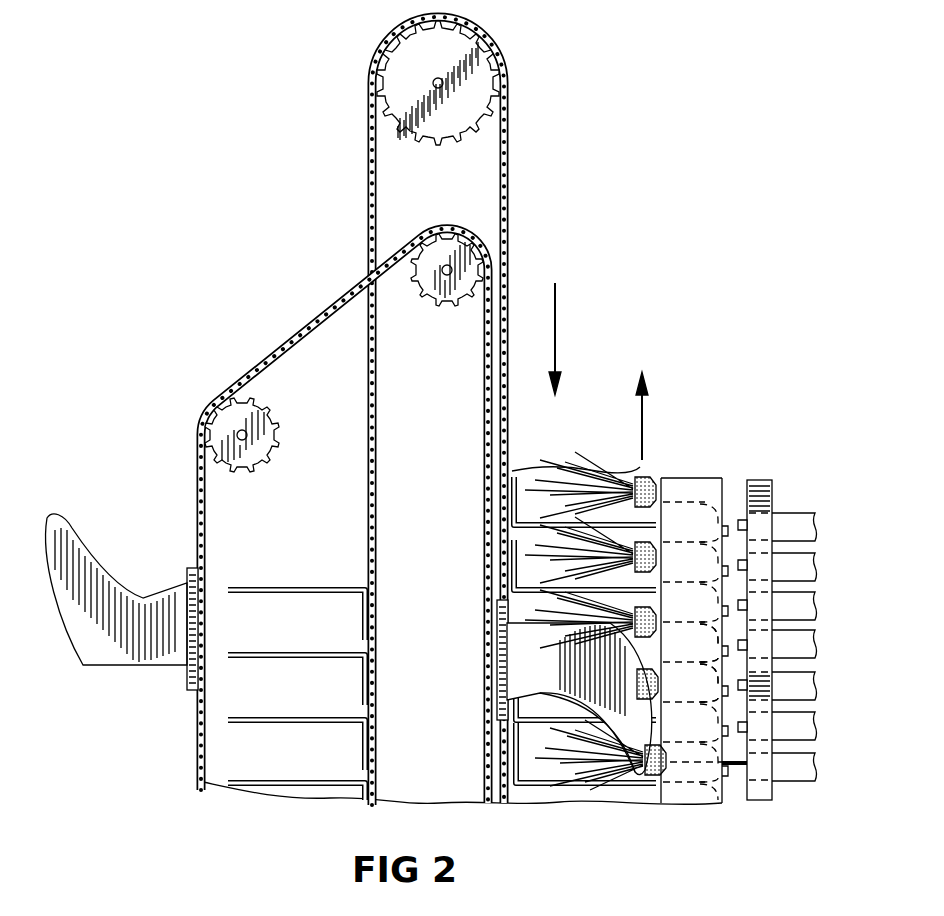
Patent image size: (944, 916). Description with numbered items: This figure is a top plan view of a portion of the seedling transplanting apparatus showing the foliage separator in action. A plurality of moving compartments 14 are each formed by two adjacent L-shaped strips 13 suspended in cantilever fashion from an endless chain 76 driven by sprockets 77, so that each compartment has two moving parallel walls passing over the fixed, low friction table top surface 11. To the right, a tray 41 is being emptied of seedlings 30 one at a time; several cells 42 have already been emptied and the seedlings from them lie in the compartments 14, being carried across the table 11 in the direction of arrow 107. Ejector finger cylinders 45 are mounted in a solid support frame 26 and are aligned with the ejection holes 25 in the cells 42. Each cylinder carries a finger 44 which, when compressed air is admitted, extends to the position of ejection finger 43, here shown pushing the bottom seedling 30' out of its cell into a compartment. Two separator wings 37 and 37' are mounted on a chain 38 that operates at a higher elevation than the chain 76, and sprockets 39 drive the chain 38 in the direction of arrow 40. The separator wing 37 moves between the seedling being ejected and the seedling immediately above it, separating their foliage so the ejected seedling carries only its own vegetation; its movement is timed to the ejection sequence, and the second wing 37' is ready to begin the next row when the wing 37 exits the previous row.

The table top surface 11 is at (540, 800).
The L-shaped strips 13 is at (290, 588).
The moving compartments 14 is at (315, 636).
The ejection holes 25 is at (717, 686).
The support frame 26 is at (766, 492).
The seedlings 30 is at (591, 571).
The bottom seedling 30' is at (593, 755).
The separator wing 37 is at (546, 687).
The second separator wing 37' is at (122, 602).
The chain 38 is at (202, 492).
The sprockets 39 is at (436, 262).
The arrow 40 is at (557, 339).
The tray 41 is at (695, 488).
The cells 42 is at (712, 606).
The ejection finger 43 is at (695, 765).
The finger 44 is at (738, 524).
The ejector finger cylinders 45 is at (800, 565).
The endless chain 76 is at (506, 197).
The sprockets 77 is at (480, 83).
The arrow 107 is at (644, 420).